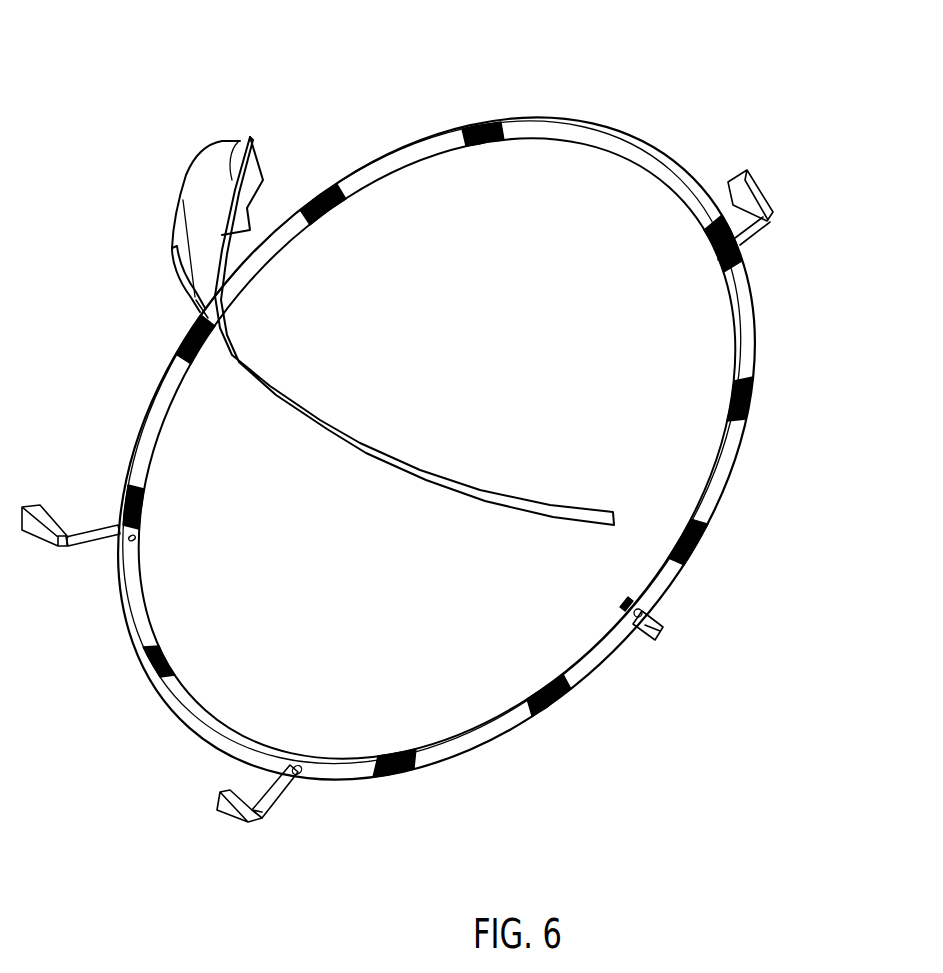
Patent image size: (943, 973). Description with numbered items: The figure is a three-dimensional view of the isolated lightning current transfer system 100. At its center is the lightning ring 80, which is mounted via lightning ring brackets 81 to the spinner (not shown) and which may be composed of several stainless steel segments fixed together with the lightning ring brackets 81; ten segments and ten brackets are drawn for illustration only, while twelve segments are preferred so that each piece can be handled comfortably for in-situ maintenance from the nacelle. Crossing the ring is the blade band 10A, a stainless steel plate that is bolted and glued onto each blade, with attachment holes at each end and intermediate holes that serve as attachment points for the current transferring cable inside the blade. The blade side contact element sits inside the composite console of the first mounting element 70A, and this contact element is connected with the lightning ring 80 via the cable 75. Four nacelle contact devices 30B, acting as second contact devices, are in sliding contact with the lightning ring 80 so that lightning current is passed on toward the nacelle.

The isolated lightning current transfer system 100 is at (550, 62).
The lightning ring 80 is at (212, 730).
The lightning ring brackets 81 is at (335, 215).
The blade band 10A is at (437, 487).
The first mounting element 70A is at (188, 200).
The cable 75 is at (191, 315).
The nacelle contact device 30B is at (84, 524).